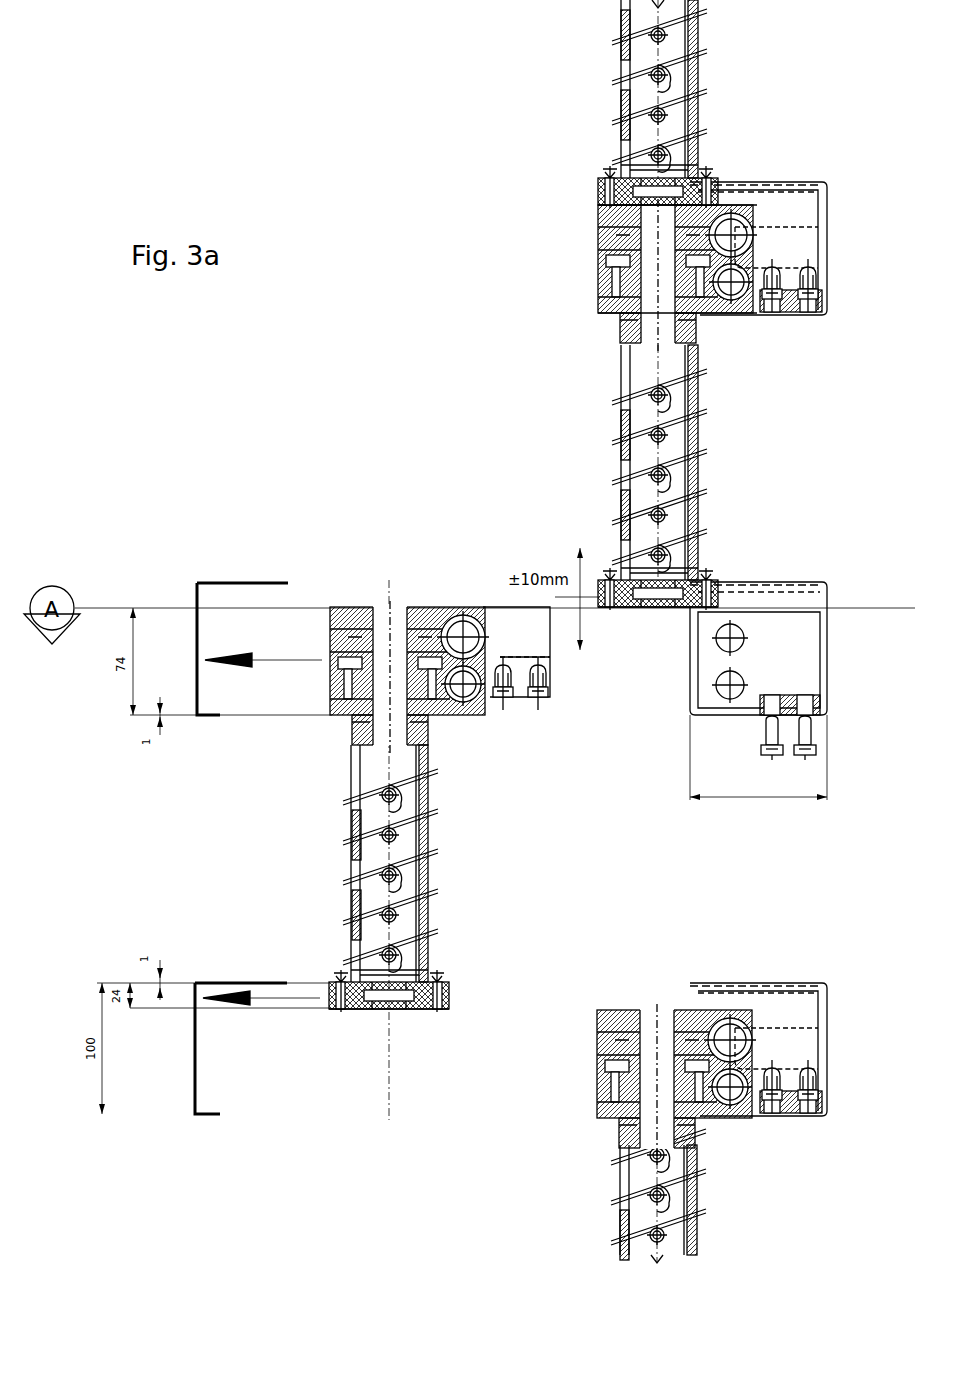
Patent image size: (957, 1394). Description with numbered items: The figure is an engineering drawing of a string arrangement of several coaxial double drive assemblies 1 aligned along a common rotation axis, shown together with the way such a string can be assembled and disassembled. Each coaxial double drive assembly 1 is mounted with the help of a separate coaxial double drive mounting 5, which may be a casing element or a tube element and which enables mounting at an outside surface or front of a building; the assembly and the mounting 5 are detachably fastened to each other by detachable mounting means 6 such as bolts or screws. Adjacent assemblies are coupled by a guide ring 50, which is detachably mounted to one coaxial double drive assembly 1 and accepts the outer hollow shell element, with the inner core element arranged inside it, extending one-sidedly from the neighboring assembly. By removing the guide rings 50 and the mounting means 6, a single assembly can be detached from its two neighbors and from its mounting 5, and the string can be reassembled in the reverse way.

The coaxial double drive assembly 1 is at (533, 260).
The coaxial double drive mounting 5 is at (836, 290).
The detachable mounting means 6 is at (806, 763).
The guide ring 50 is at (580, 198).